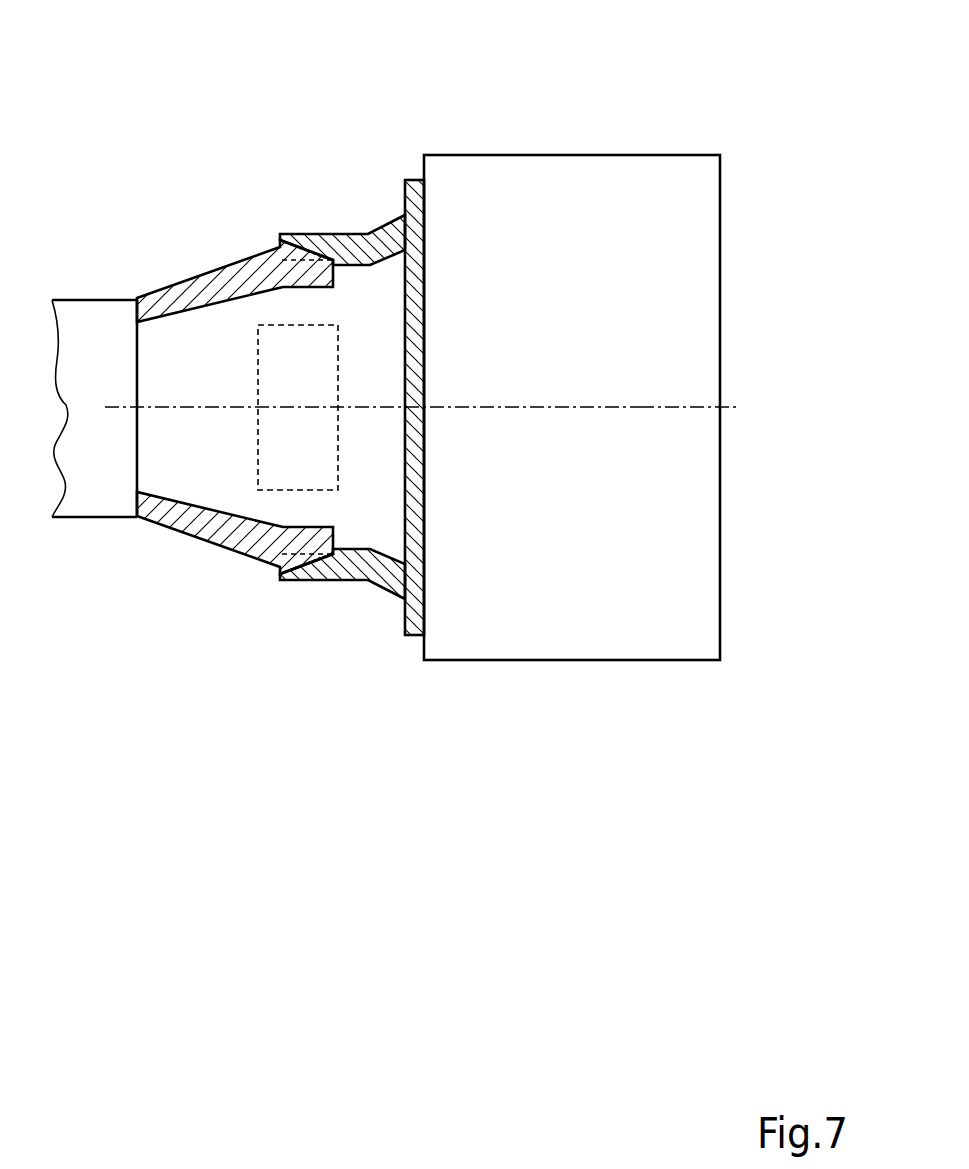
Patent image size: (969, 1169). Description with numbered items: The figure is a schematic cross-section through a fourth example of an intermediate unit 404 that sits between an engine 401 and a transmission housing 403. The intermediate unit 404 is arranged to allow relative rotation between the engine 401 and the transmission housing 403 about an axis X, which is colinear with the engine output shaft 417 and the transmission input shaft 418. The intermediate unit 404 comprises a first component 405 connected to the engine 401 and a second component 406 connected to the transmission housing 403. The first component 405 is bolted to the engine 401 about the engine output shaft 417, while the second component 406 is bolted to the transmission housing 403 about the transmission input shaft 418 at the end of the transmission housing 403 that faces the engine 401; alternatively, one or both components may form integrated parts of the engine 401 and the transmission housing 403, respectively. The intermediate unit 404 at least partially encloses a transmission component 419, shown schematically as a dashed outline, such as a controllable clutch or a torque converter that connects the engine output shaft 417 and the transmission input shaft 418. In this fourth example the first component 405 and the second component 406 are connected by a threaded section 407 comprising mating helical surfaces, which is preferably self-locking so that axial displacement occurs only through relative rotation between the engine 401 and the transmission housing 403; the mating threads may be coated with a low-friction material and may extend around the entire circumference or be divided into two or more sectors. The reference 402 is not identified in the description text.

The engine 401 is at (493, 150).
The tube 402 is at (101, 289).
The transmission housing 403 is at (95, 512).
The intermediate unit 404 is at (310, 582).
The first component 405 is at (388, 568).
The second component 406 is at (217, 536).
The threaded section 407 is at (307, 258).
The engine output shaft 417 is at (627, 386).
The transmission input shaft 418 is at (210, 398).
The transmission component 419 is at (347, 325).
The axis X is at (642, 408).